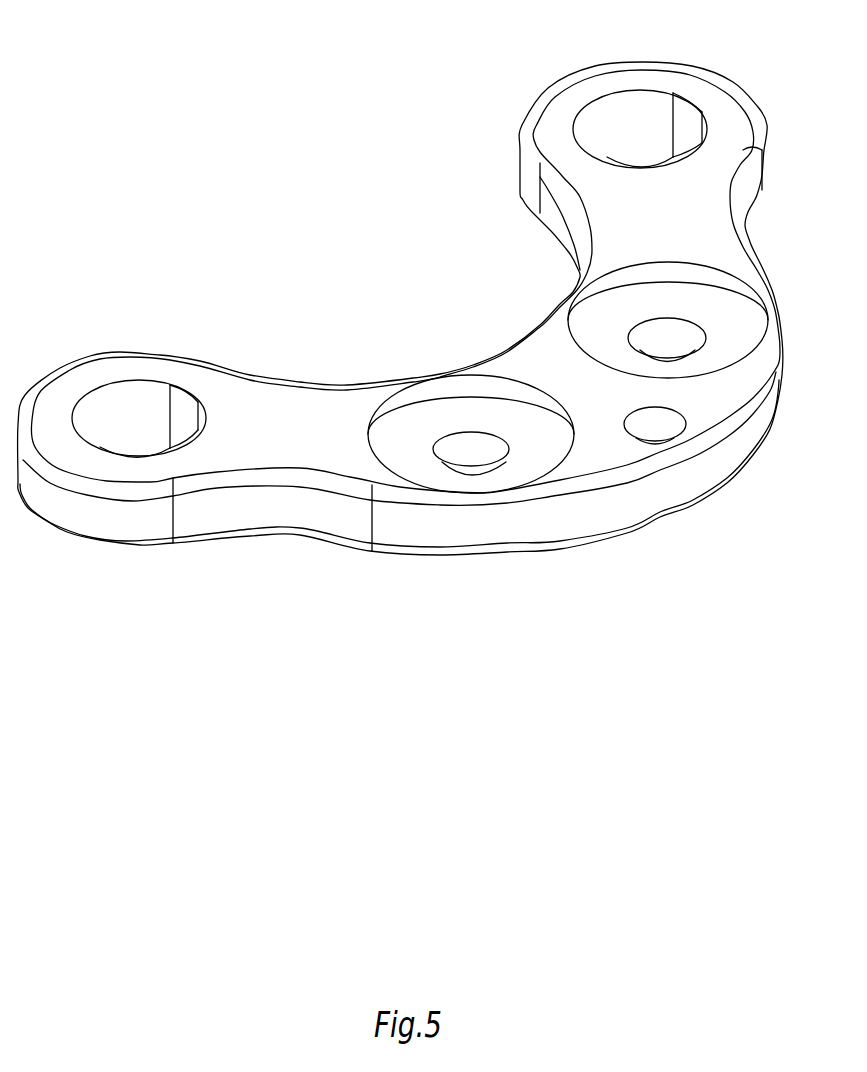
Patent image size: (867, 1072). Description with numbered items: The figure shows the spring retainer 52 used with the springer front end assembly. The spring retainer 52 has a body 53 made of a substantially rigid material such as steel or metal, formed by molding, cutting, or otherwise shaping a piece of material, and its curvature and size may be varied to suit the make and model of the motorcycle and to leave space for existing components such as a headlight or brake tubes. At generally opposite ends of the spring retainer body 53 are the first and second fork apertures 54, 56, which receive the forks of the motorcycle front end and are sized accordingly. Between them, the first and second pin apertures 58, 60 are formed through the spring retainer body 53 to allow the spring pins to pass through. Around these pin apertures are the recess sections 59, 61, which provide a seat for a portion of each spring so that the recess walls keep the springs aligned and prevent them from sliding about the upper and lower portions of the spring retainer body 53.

The spring retainer 52 is at (346, 122).
The spring retainer body 53 is at (710, 400).
The first fork aperture 54 is at (130, 410).
The second fork aperture 56 is at (612, 122).
The first pin aperture 58 is at (472, 447).
The first recess section 59 is at (403, 430).
The second pin aperture 60 is at (662, 333).
The second recess section 61 is at (740, 322).